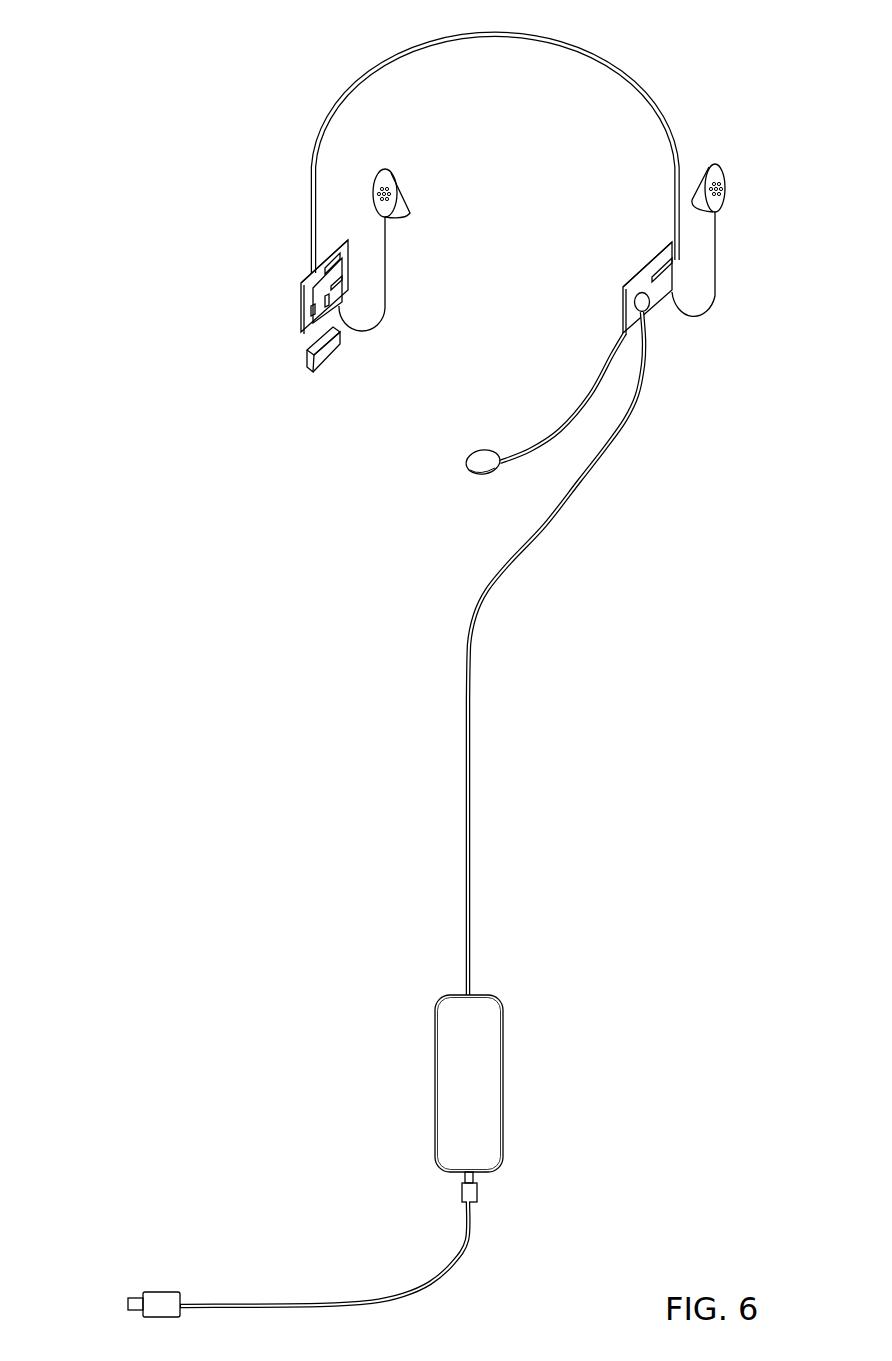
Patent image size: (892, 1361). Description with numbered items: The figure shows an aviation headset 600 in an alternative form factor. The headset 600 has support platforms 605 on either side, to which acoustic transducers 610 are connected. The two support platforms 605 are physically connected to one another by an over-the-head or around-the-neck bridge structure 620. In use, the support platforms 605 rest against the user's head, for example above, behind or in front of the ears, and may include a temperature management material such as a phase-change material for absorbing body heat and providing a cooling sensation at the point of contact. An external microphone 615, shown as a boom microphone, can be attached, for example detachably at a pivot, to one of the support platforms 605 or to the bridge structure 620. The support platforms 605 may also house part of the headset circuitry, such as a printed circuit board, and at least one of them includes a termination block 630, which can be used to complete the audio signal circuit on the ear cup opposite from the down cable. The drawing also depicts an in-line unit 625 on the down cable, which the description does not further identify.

The headset 600 is at (164, 30).
The support platforms 605 is at (300, 305).
The acoustic transducers 610 is at (383, 176).
The external microphone 615 is at (485, 452).
The bridge structure 620 is at (502, 26).
The battery pack / control unit 625 is at (503, 1083).
The termination block 630 is at (305, 360).